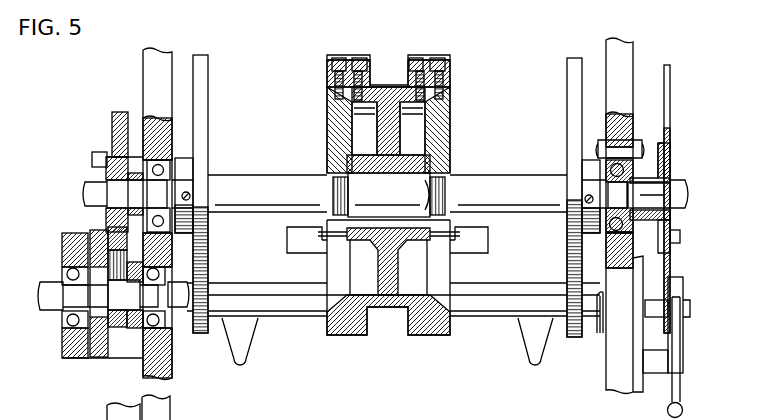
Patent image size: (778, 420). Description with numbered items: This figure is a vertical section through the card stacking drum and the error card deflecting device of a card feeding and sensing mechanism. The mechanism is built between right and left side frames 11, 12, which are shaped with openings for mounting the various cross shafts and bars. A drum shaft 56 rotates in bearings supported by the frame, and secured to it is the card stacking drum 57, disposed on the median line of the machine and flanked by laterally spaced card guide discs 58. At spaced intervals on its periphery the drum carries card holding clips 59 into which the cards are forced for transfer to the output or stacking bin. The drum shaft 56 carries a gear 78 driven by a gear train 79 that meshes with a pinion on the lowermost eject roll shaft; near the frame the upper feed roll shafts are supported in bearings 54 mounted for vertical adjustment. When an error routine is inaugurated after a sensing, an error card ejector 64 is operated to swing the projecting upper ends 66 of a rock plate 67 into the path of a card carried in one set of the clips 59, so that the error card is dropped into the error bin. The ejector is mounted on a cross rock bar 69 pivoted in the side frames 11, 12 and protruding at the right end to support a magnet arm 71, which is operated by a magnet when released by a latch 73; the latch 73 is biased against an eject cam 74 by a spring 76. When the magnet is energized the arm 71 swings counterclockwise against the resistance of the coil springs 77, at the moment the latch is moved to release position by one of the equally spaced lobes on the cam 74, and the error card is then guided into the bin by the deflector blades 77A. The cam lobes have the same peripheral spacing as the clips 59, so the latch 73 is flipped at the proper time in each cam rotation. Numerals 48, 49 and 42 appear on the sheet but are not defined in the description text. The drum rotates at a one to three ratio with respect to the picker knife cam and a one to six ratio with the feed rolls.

The right side frame 11 is at (145, 76).
The left side frame 12 is at (626, 53).
The card guide discs 58 is at (205, 70).
The error card ejector 64 is at (264, 220).
The drum shaft 56 is at (510, 183).
The card stacking drum 57 is at (446, 125).
The card holding clips 59 is at (413, 54).
The projecting upper ends 66 is at (322, 232).
The cross rock bar 69 is at (310, 303).
The rock plate 67 is at (498, 272).
The deflector blades 77A is at (247, 347).
The coil springs 77 is at (596, 334).
The gear 78 is at (112, 127).
The gear train 79 is at (92, 228).
The eject cam 74 is at (670, 95).
The magnet arm 71 is at (683, 287).
The latch 73 is at (680, 383).
The spring 76 is at (683, 408).
The bearings 54 is at (74, 415).
The member 48 is at (300, 416).
The member 49 is at (464, 416).
The member 42 is at (568, 416).